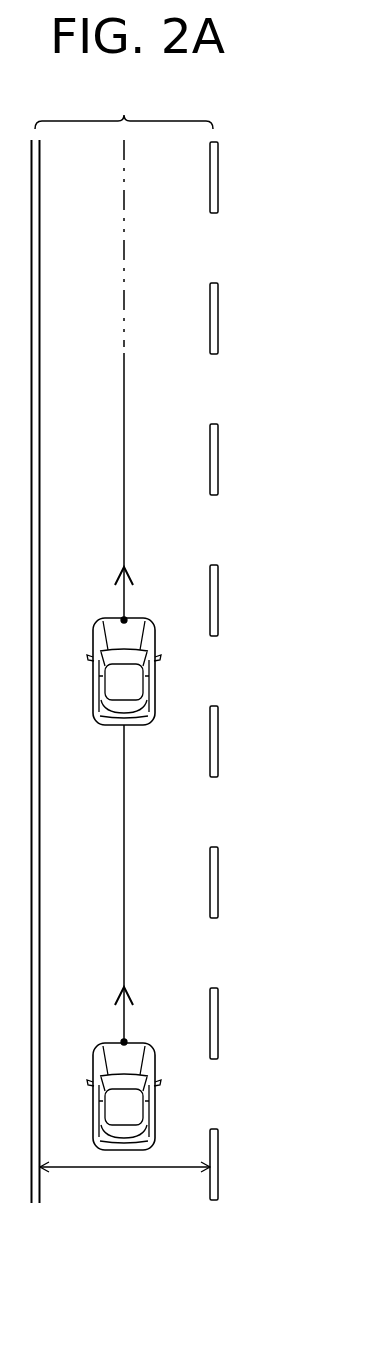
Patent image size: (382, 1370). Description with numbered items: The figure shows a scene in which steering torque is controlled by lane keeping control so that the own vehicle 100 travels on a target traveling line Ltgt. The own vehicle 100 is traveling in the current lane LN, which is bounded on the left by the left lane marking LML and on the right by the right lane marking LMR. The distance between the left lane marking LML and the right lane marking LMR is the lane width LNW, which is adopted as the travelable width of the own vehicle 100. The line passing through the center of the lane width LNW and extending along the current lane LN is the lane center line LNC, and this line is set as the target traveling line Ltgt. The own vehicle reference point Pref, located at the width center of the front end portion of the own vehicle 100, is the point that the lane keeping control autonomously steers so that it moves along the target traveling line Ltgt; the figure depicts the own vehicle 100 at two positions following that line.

The current lane LN is at (124, 106).
The left lane marking LML is at (35, 158).
The right lane marking LMR is at (212, 193).
The lane center line LNC is at (124, 263).
The target traveling line Ltgt is at (124, 388).
The own vehicle reference point Pref is at (127, 617).
The own vehicle 100 is at (155, 672).
The lane width LNW is at (125, 1180).